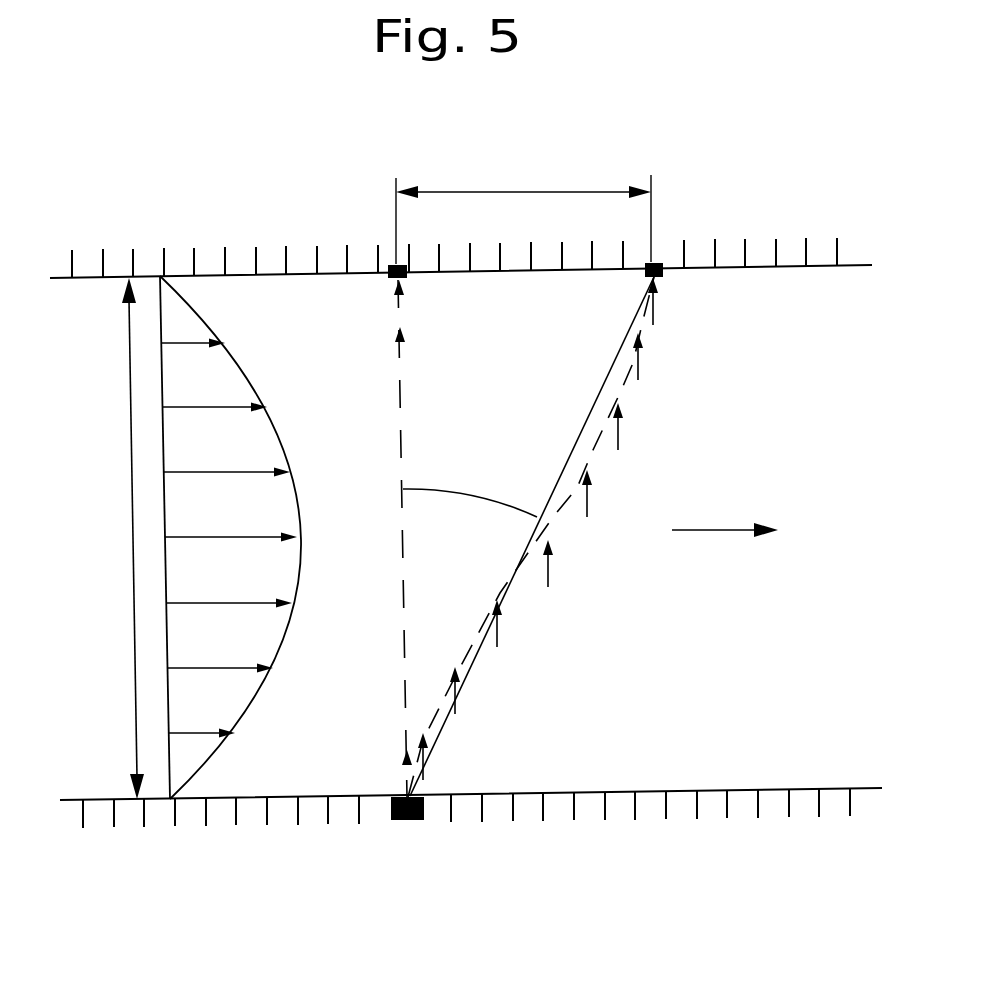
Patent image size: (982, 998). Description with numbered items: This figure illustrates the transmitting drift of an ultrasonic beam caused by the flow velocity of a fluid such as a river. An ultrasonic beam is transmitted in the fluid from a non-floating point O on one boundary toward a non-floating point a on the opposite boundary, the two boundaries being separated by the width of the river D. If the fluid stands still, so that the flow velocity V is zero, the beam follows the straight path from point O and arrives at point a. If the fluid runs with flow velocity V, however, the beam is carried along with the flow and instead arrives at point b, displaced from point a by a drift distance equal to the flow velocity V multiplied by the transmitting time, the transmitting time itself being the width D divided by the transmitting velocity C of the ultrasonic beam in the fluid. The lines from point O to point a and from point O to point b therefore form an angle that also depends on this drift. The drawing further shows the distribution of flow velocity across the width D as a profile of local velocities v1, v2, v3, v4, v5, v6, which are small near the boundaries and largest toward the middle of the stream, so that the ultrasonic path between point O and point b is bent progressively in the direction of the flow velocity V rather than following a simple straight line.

The non-floating point a is at (393, 265).
The point b is at (657, 262).
The non-floating point O is at (407, 796).
The transmitting velocity of ultrasonic beam C is at (514, 537).
The width of a river D is at (121, 538).
The flow velocity V is at (743, 530).
The local flow velocity v1 is at (196, 364).
The local flow velocity v2 is at (217, 430).
The local flow velocity v3 is at (229, 501).
The local flow velocity v4 is at (231, 570).
The local flow velocity v5 is at (220, 651).
The local flow velocity v6 is at (202, 717).